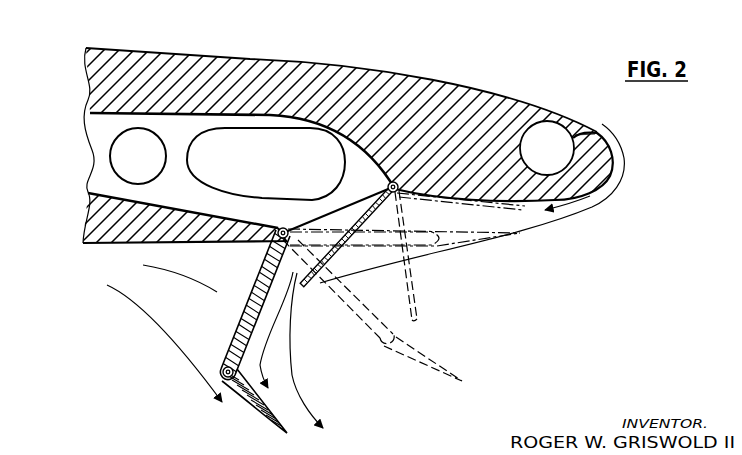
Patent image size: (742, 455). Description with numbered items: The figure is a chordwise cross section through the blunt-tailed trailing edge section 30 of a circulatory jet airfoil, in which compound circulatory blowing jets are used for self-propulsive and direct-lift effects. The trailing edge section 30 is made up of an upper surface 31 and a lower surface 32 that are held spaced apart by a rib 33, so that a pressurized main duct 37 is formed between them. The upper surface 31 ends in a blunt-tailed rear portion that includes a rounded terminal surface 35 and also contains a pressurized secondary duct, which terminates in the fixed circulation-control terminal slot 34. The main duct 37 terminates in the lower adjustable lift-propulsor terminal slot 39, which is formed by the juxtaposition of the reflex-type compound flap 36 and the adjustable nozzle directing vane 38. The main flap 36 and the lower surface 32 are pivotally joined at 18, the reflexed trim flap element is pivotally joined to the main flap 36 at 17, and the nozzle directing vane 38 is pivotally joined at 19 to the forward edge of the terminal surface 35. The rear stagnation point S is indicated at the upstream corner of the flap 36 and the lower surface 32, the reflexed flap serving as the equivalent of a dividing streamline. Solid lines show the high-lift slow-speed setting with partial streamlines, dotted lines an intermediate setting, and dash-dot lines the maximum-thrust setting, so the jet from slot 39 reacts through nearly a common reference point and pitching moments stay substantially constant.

The pivot joint of trim flap element 17 is at (224, 362).
The pivot joint of flap and lower surface 18 is at (283, 227).
The pivot joint of nozzle directing vane 19 is at (390, 183).
The trailing edge section 30 is at (371, 129).
The upper surface 31 is at (155, 50).
The lower surface 32 is at (100, 247).
The rib 33 is at (100, 153).
The CC terminal fixed slot 34 is at (596, 130).
The rounded terminal surface 35 is at (605, 185).
The main flap element 36 is at (242, 320).
The pressurized main duct 37 is at (253, 145).
The nozzle directing vane 38 is at (336, 249).
The lower adjustable lift-propulsor terminal slot 39 is at (294, 295).
The rear stagnation point S is at (263, 252).